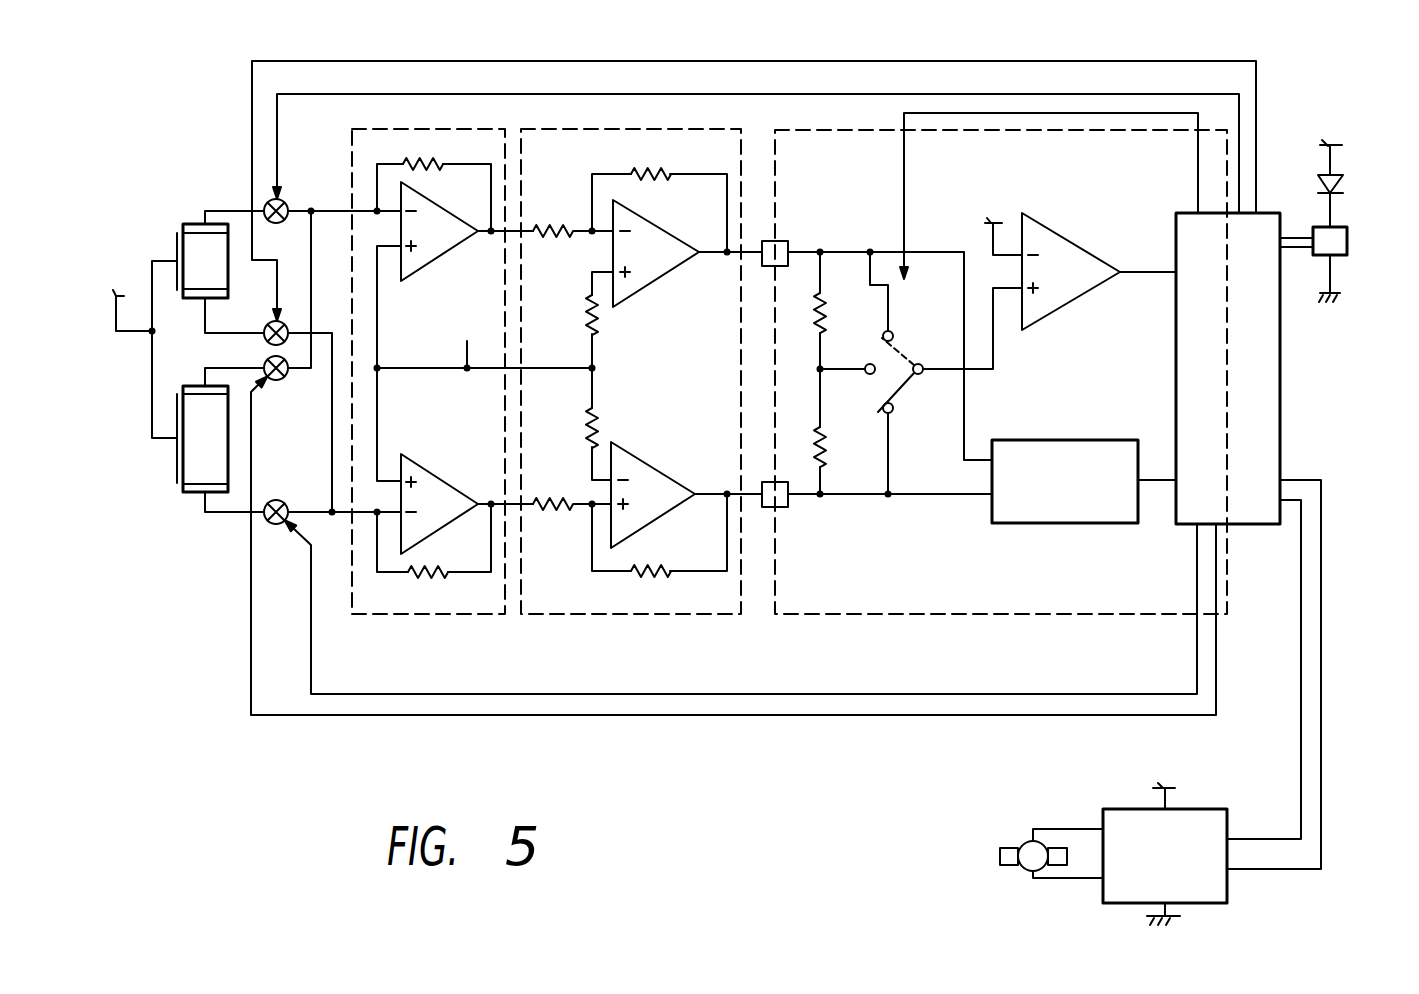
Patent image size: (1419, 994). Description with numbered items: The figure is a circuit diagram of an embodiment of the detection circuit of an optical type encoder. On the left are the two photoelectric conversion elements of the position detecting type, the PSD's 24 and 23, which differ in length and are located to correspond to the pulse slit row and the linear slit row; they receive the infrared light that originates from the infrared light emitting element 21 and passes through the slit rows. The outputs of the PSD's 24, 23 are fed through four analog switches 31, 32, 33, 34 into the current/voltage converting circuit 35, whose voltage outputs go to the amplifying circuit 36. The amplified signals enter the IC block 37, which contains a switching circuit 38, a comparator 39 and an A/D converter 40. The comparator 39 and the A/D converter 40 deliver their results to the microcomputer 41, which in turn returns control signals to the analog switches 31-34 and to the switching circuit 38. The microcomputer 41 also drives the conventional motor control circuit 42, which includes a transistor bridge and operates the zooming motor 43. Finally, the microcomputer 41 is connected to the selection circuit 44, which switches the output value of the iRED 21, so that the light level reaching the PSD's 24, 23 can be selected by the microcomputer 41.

The infrared light emitting element 21 is at (1344, 185).
The photoelectric conversion element of the position detecting type 23 is at (191, 493).
The photoelectric conversion element of the position detecting type 24 is at (193, 224).
The analog switch 31 is at (287, 200).
The analog switch 32 is at (268, 324).
The analog switch 33 is at (284, 380).
The analog switch 34 is at (277, 525).
The current/voltage converting circuit 35 is at (435, 616).
The amplifying circuit 36 is at (623, 616).
The IC block 37 is at (994, 372).
The switching circuit 38 is at (906, 351).
The comparator 39 is at (1062, 236).
The A/D converter 40 is at (1036, 525).
The microcomputer 41 is at (1245, 526).
The motor control circuit 42 is at (1228, 812).
The zooming motor 43 is at (1021, 844).
The selection circuit 44 is at (1348, 245).